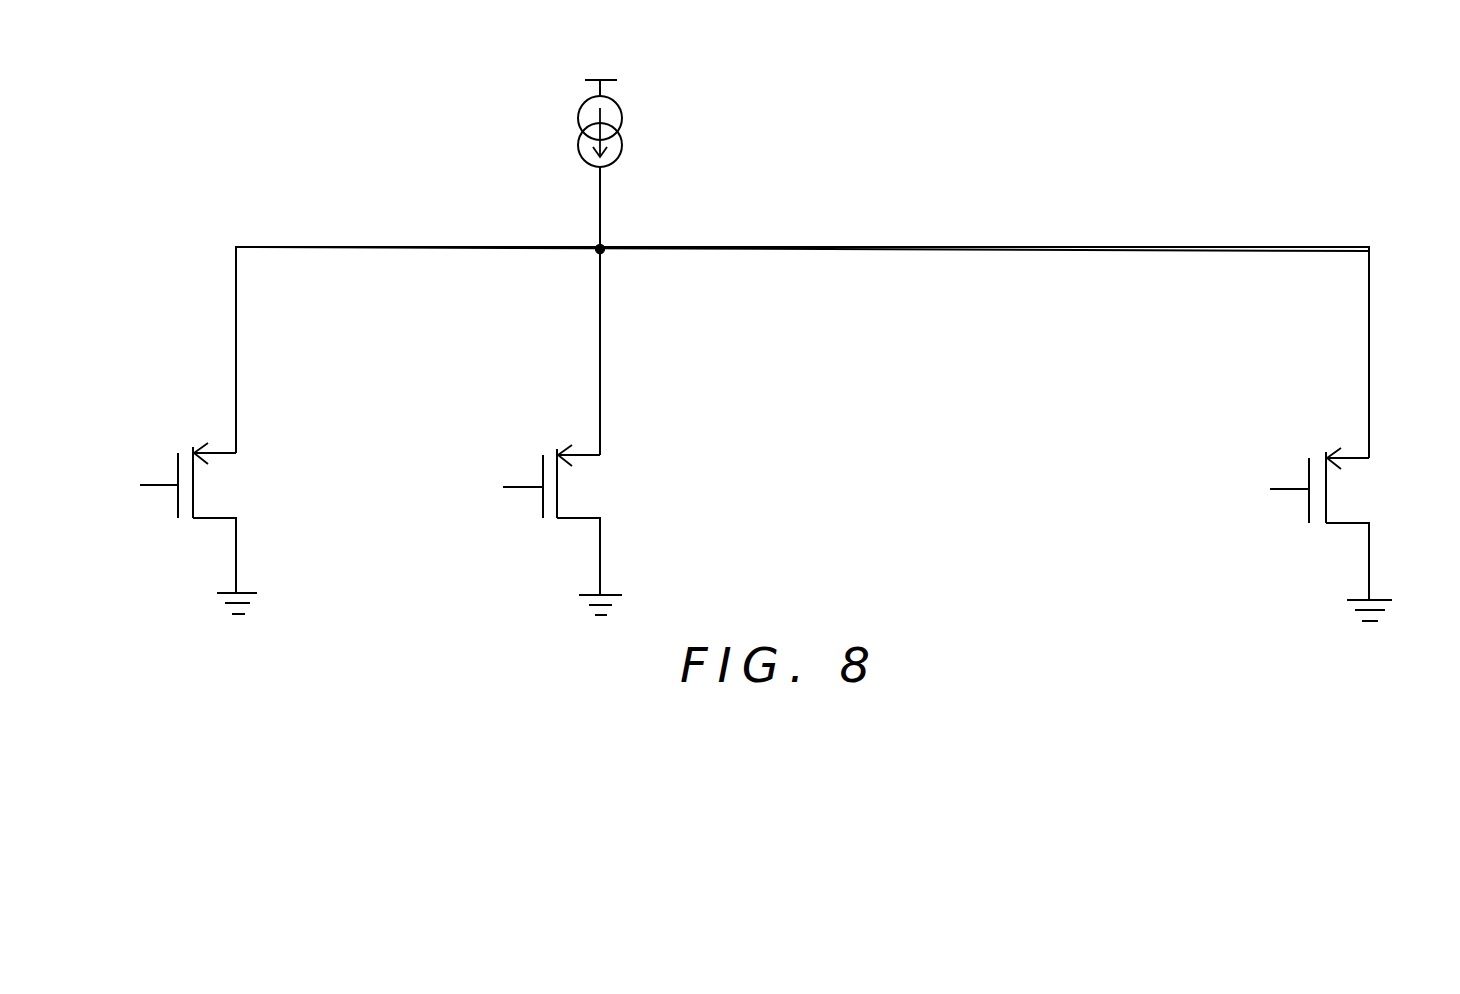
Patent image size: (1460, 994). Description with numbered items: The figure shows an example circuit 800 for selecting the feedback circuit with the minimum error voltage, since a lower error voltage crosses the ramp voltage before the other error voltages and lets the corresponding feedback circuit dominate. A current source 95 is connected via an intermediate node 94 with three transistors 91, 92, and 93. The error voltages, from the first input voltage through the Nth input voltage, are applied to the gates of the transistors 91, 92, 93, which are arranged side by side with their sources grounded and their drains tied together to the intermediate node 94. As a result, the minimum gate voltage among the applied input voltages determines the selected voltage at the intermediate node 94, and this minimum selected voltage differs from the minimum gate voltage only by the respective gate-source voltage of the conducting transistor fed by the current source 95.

The multiplexer circuit 800 is at (415, 100).
The transistor 91 is at (215, 485).
The transistor 92 is at (578, 487).
The transistor 93 is at (1347, 490).
The intermediate node 94 is at (912, 247).
The current source 95 is at (622, 147).